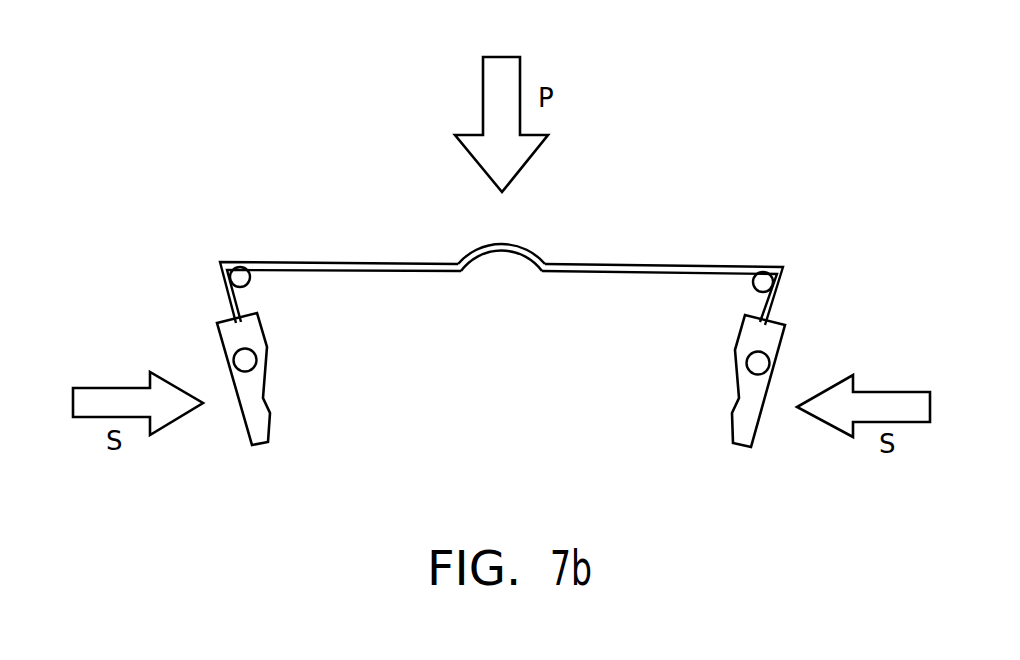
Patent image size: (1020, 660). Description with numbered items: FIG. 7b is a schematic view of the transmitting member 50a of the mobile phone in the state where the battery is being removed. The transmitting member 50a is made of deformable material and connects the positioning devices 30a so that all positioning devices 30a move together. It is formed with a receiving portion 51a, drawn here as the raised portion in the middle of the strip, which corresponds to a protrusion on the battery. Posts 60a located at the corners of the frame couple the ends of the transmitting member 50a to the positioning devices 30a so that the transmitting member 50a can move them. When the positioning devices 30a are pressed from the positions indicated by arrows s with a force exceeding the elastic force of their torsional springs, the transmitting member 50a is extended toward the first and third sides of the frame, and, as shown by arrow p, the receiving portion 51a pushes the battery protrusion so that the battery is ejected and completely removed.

The positioning device 30a is at (245, 361).
The transmitting member 50a is at (664, 258).
The receiving portion 51a is at (502, 243).
The post 60a is at (240, 268).